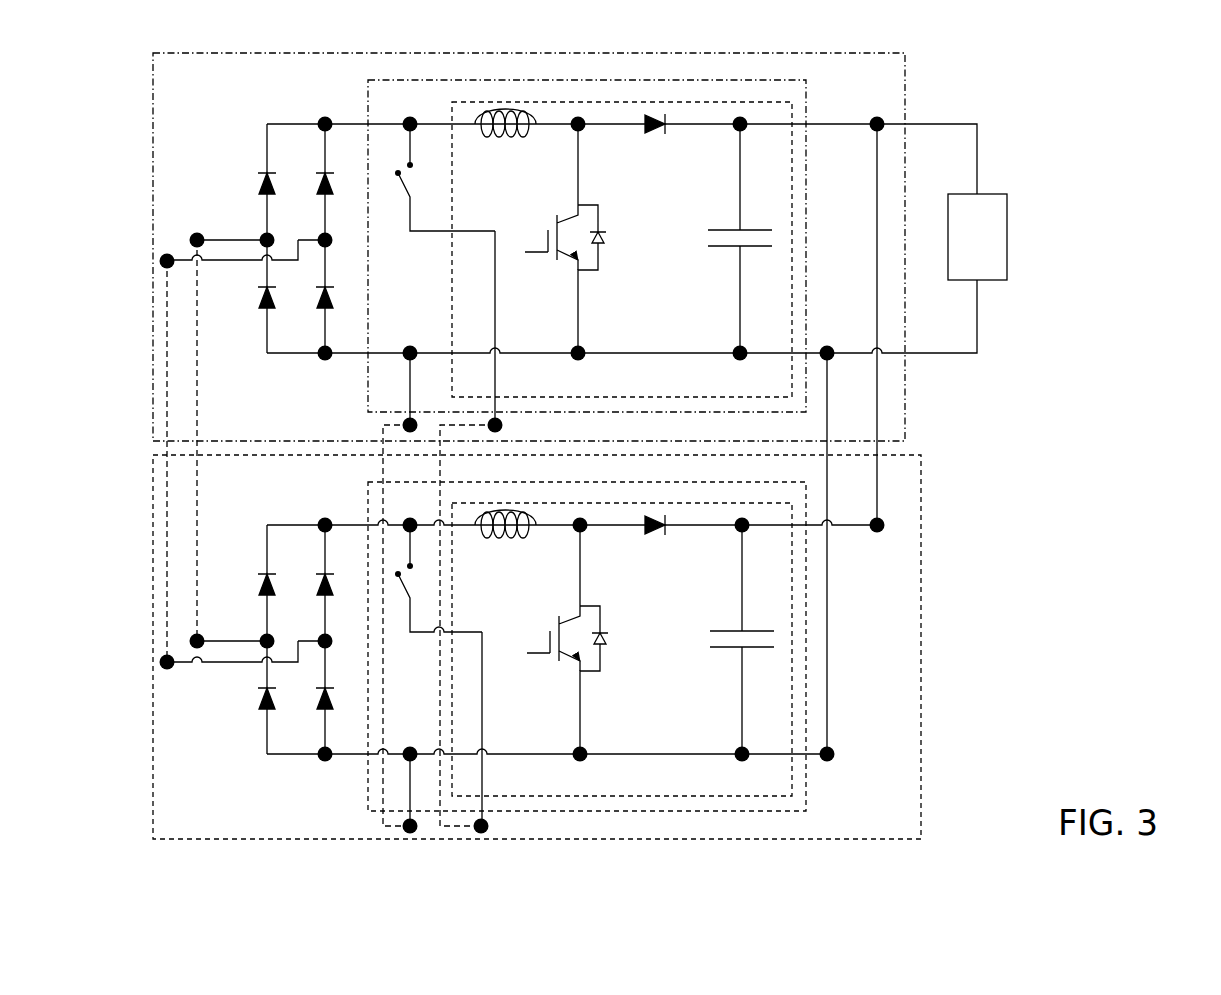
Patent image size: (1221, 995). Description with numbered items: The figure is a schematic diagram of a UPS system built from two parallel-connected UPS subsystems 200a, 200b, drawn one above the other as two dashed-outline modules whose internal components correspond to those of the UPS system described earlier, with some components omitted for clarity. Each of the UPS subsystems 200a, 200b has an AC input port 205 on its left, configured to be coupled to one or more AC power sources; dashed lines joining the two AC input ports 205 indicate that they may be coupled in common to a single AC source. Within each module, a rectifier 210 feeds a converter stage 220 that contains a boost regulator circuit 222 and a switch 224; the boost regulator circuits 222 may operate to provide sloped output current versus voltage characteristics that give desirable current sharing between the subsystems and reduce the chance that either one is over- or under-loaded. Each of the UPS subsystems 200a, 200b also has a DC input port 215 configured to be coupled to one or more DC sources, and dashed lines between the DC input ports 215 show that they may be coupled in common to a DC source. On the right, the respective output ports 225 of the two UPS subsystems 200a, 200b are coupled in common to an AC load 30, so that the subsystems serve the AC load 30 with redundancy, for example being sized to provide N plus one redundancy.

The UPS subsystem 200a is at (530, 53).
The UPS subsystem 200b is at (543, 843).
The AC input port 205 is at (138, 240).
The rectifier bridge 210 is at (238, 139).
The DC input port 215 is at (435, 418).
The DC-DC converter 220 is at (592, 82).
The boost regulator circuit 222 is at (623, 103).
The bypass switch 224 is at (428, 182).
The output port 225 is at (892, 208).
The AC load 30 is at (1007, 235).